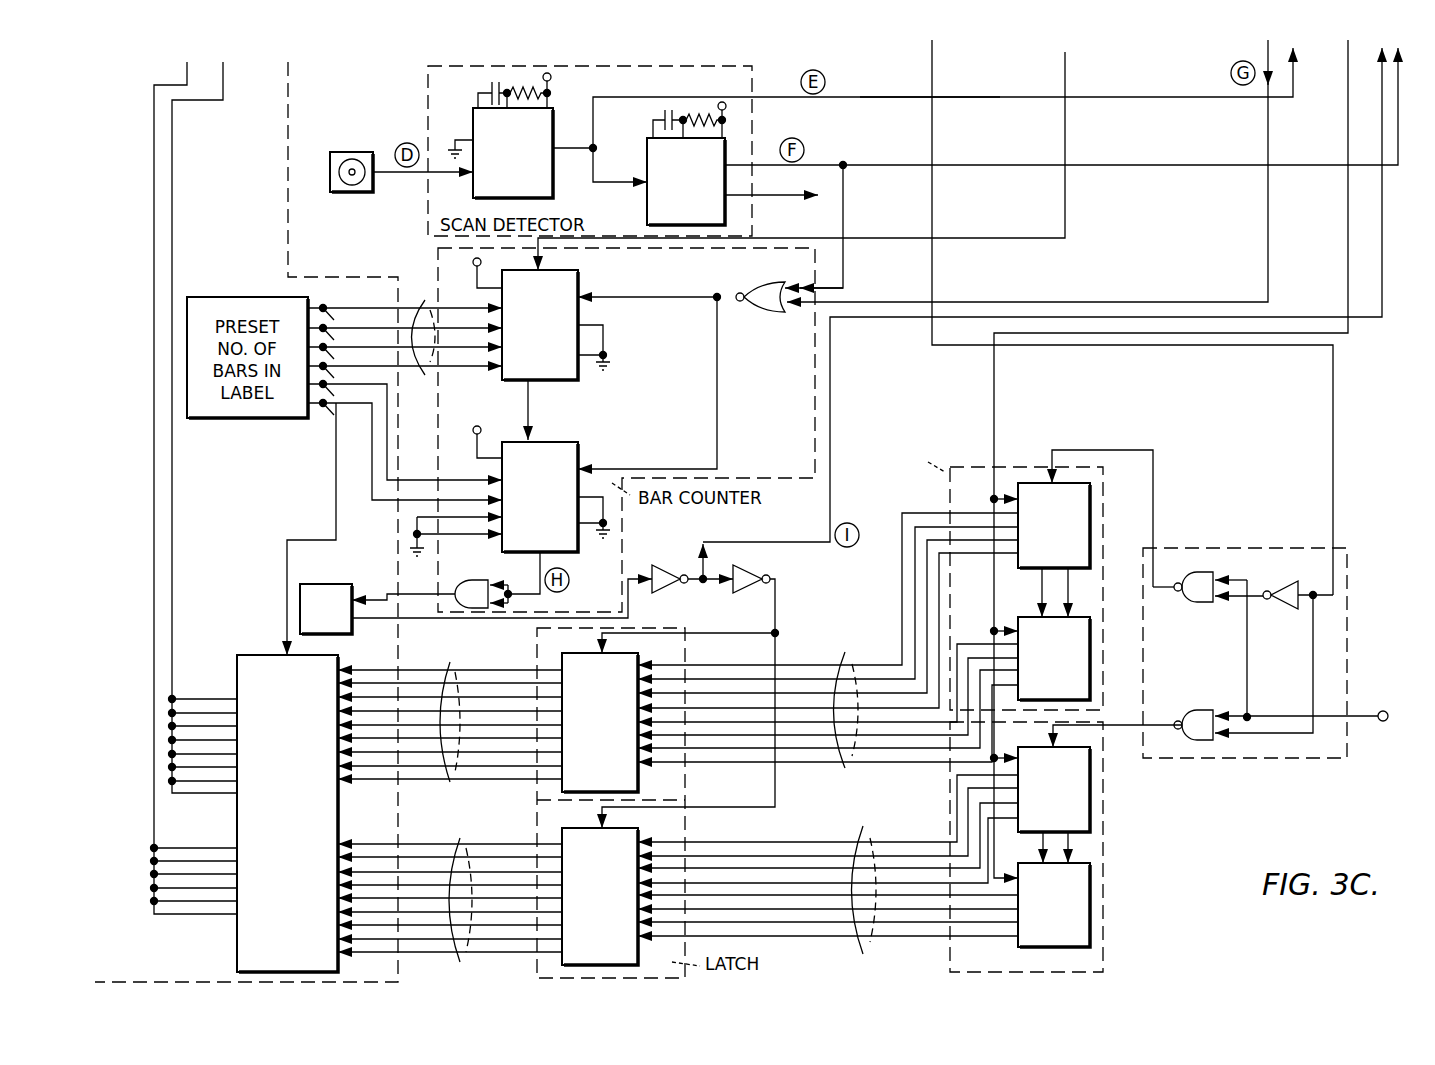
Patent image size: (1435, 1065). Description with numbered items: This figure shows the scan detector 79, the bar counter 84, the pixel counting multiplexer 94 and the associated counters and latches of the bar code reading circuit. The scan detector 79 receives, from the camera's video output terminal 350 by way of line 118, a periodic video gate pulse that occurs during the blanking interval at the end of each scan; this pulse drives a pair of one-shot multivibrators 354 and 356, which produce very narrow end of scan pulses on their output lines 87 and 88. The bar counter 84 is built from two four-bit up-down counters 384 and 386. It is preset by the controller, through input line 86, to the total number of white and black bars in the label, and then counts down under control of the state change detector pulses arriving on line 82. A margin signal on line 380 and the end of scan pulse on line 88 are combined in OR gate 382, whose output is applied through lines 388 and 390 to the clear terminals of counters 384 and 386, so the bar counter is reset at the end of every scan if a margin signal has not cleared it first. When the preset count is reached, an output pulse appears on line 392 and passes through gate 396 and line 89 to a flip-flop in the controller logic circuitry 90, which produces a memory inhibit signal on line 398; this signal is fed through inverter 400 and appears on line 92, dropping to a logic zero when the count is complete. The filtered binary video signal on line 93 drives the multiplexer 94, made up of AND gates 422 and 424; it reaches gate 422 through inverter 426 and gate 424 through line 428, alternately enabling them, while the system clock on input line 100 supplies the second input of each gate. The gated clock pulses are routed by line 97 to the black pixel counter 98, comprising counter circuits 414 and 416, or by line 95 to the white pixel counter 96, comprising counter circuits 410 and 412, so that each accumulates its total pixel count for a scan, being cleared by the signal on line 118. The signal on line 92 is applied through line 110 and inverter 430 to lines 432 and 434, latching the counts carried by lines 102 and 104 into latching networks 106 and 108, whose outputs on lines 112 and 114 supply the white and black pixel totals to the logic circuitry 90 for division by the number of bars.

The scan detector 79 is at (347, 285).
The video output terminal 350 is at (357, 152).
The line 118 is at (418, 174).
The one-shot multivibrator 354 is at (555, 118).
The output line 87 is at (878, 88).
The one-shot multivibrator 356 is at (647, 216).
The output line 88 is at (768, 168).
The line 82 is at (830, 237).
The line 380 is at (1266, 232).
The line 92 is at (1384, 240).
The line 93 is at (1050, 348).
The four-bit up-down counter 384 is at (580, 276).
The line 388 is at (690, 292).
The line 390 is at (716, 396).
The OR gate 382 is at (760, 285).
The bar counter 84 is at (830, 288).
The line 86 is at (405, 400).
The four-bit up-down counter 386 is at (585, 433).
The line 392 is at (536, 583).
The gate 396 is at (477, 580).
The line 89 is at (416, 606).
The line 398 is at (472, 620).
The logic circuitry 90 is at (345, 584).
The inverter 400 is at (658, 566).
The inverter 430 is at (748, 594).
The line 110 is at (717, 573).
The line 434 is at (702, 632).
The line 432 is at (778, 800).
The latching network 108 is at (690, 797).
The latching network 106 is at (680, 829).
The latch output line 114 is at (449, 783).
The latch output line 112 is at (462, 838).
The line 104 is at (846, 768).
The line 102 is at (866, 840).
The black pixel counter 98 is at (950, 492).
The white pixel counter 96 is at (1104, 850).
The counter circuit 414 is at (1093, 528).
The counter circuit 416 is at (1093, 658).
The counter circuit 410 is at (1093, 806).
The counter circuit 412 is at (1093, 924).
The line 97 is at (1134, 448).
The line 95 is at (1120, 730).
The multiplexer 94 is at (1245, 548).
The AND gate 422 is at (1195, 604).
The inverter 426 is at (1297, 583).
The line 428 is at (1310, 665).
The AND gate 424 is at (1206, 710).
The input line 100 is at (1368, 728).